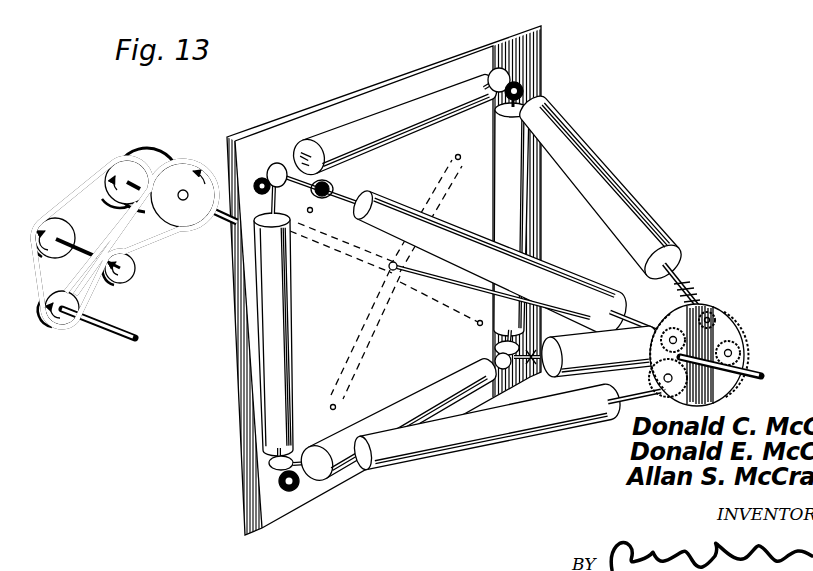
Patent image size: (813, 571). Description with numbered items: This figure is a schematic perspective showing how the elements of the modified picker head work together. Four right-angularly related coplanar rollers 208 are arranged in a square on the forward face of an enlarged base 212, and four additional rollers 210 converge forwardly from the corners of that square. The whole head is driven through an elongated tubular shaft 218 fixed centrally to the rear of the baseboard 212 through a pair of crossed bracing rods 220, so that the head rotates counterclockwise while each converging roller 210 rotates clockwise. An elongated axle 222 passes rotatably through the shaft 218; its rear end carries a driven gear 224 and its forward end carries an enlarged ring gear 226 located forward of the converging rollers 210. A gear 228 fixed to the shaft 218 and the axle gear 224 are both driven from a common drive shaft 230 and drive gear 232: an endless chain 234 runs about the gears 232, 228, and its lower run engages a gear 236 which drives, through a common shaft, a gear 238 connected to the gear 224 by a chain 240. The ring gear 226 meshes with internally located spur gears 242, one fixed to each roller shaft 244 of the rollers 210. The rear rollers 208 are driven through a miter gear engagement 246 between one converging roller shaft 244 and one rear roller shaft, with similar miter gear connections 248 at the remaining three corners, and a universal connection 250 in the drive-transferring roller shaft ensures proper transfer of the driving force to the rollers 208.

The coplanar rollers 208 is at (426, 96).
The converging rollers 210 is at (605, 150).
The base 212 is at (355, 107).
The tubular shaft 218 is at (213, 213).
The crossed bracing rods 220 is at (358, 337).
The axle 222 is at (445, 281).
The driven gear 224 is at (140, 164).
The ring gear 226 is at (737, 318).
The gear 228 is at (185, 163).
The drive shaft 230 is at (118, 342).
The drive gear 232 is at (58, 325).
The endless chain 234 is at (146, 243).
The gear 236 is at (122, 274).
The gear 238 is at (51, 218).
The chain 240 is at (79, 192).
The spur gears 242 is at (750, 356).
The roller shafts 244 is at (684, 288).
The miter gear engagement 246 is at (270, 160).
The miter gear connections 248 is at (522, 86).
The universal connection 250 is at (337, 187).